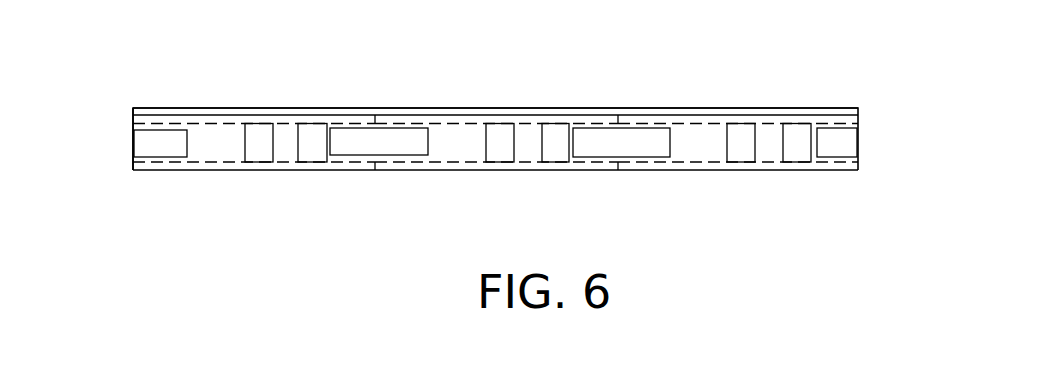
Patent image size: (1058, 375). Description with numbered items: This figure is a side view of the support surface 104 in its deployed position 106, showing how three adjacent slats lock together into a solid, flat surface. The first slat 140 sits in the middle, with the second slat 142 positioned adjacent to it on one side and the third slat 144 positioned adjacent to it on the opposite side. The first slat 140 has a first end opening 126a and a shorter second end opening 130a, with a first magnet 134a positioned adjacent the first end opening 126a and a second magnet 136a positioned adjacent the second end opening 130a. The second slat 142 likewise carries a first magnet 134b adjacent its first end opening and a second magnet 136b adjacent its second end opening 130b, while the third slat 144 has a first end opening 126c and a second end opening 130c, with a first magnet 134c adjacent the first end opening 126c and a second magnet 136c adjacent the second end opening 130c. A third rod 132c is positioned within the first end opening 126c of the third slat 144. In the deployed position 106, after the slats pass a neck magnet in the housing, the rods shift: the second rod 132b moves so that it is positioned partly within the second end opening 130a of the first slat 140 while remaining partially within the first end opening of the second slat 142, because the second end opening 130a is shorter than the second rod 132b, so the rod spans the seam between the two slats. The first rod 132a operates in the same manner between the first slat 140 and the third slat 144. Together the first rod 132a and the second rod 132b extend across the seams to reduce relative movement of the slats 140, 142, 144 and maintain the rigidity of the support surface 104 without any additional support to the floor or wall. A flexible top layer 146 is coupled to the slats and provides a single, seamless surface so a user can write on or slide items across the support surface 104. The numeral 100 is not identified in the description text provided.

The printed circuit board assembly 100 is at (843, 147).
The support surface 104 is at (878, 86).
The deployed position 106 is at (96, 168).
The first end opening 126a is at (427, 123).
The first end opening 126c is at (163, 123).
The second end opening 130a is at (595, 162).
The second end opening 130b is at (840, 162).
The second end opening 130c is at (352, 162).
The first rod 132a is at (388, 145).
The second rod 132b is at (643, 147).
The third rod 132c is at (168, 147).
The first magnet 134a is at (498, 133).
The first magnet 134b is at (740, 135).
The first magnet 134c is at (250, 135).
The second magnet 136a is at (553, 133).
The second magnet 136b is at (797, 135).
The second magnet 136c is at (312, 140).
The first slat 140 is at (500, 170).
The second slat 142 is at (762, 170).
The third slat 144 is at (255, 170).
The flexible top layer 146 is at (147, 108).